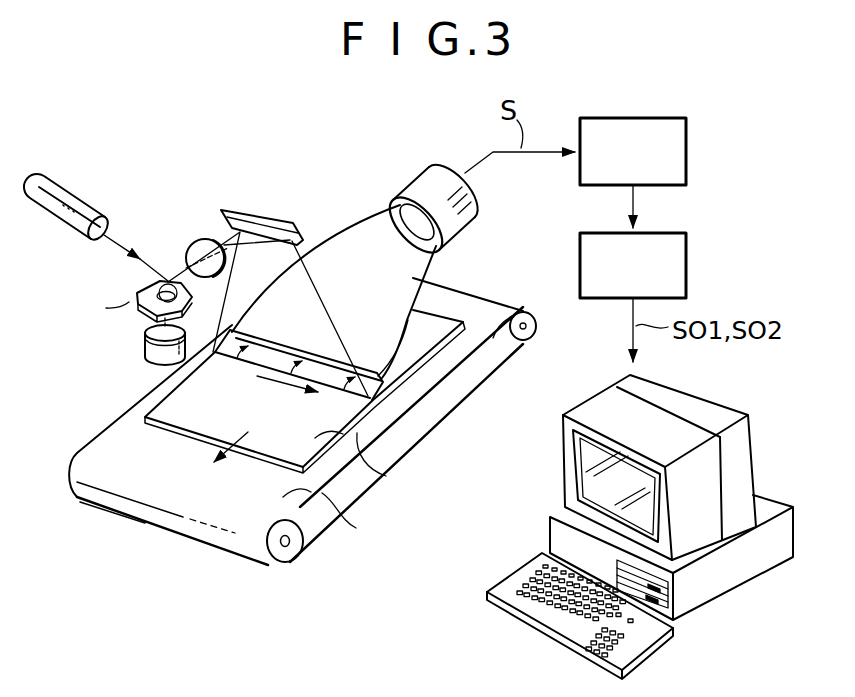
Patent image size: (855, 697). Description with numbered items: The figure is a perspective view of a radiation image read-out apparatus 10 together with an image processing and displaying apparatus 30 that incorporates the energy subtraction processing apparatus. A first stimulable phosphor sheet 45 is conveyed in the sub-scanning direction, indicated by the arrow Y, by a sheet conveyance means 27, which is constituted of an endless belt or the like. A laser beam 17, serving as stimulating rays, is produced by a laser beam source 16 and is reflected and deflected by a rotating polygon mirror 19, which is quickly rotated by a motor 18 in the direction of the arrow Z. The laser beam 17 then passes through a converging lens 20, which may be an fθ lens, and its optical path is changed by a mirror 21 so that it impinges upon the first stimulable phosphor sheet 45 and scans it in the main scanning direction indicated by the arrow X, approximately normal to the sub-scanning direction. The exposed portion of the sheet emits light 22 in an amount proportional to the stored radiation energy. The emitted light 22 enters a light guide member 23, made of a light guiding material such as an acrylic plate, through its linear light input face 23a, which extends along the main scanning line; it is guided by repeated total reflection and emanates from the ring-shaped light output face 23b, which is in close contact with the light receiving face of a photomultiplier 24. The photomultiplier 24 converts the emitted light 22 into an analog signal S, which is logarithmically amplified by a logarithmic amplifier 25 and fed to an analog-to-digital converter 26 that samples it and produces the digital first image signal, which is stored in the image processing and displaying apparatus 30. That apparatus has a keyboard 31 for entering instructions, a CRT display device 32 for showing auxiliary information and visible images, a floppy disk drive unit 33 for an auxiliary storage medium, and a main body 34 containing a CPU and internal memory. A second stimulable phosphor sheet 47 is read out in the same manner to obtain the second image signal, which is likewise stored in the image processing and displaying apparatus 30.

The radiation image read-out apparatus 10 is at (233, 140).
The laser beam source 16 is at (88, 199).
The laser beam 17 is at (126, 241).
The motor 18 is at (145, 349).
The rotating polygon mirror 19 is at (133, 284).
The converging lens 20 is at (197, 238).
The mirror 21 is at (270, 214).
The emitted light 22 is at (247, 345).
The light guide member 23 is at (369, 300).
The linear light input face 23a is at (363, 400).
The ring-shaped light output face 23b is at (437, 252).
The photomultiplier 24 is at (422, 178).
The logarithmic amplifier 25 is at (689, 154).
The analog-to-digital converter 26 is at (689, 245).
The sheet conveyance means 27 is at (347, 524).
The image processing and displaying apparatus 30 is at (640, 524).
The keyboard 31 is at (513, 615).
The CRT display device 32 is at (572, 470).
The floppy disk drive unit 33 is at (672, 607).
The main body 34 is at (774, 507).
The first stimulable phosphor sheet 45 is at (401, 467).
The second stimulable phosphor sheet 47 is at (386, 475).